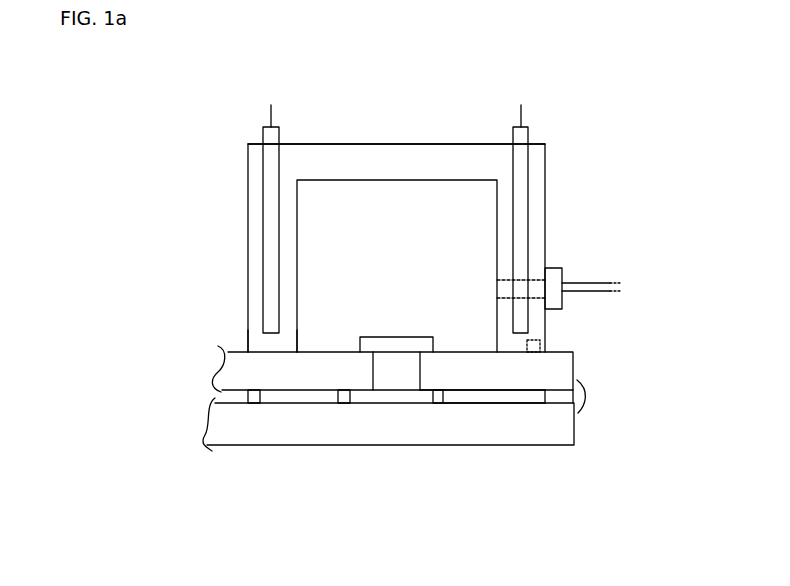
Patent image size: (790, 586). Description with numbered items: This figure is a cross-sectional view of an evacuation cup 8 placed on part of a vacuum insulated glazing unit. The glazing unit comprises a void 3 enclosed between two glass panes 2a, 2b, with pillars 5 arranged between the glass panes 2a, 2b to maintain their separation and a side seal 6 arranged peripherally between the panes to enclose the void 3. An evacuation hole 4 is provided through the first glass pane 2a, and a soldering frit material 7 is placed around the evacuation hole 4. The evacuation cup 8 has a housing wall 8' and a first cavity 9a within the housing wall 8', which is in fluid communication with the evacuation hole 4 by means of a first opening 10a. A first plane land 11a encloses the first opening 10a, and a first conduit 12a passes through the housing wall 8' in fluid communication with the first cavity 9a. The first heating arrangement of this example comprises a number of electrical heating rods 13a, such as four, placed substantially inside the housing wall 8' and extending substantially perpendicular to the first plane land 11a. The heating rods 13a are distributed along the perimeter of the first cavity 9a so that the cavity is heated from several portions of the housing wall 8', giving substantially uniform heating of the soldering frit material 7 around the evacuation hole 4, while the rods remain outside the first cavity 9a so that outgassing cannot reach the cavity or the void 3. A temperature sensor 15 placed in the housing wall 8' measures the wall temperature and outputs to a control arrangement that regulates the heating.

The evacuation cup 8 is at (396, 194).
The housing wall 8' is at (396, 160).
The first cavity 9a is at (397, 266).
The electrical heating rods 13a is at (272, 184).
The first conduit 12a is at (504, 287).
The temperature sensor 15 is at (541, 339).
The soldering frit material 7 is at (373, 343).
The evacuation hole 4 is at (392, 369).
The first opening 10a is at (323, 350).
The first plane land 11a is at (280, 356).
The pillars 5 is at (433, 401).
The side seal 6 is at (583, 393).
The void 3 is at (518, 400).
The first glass pane 2a is at (500, 372).
The second glass pane 2b is at (502, 428).